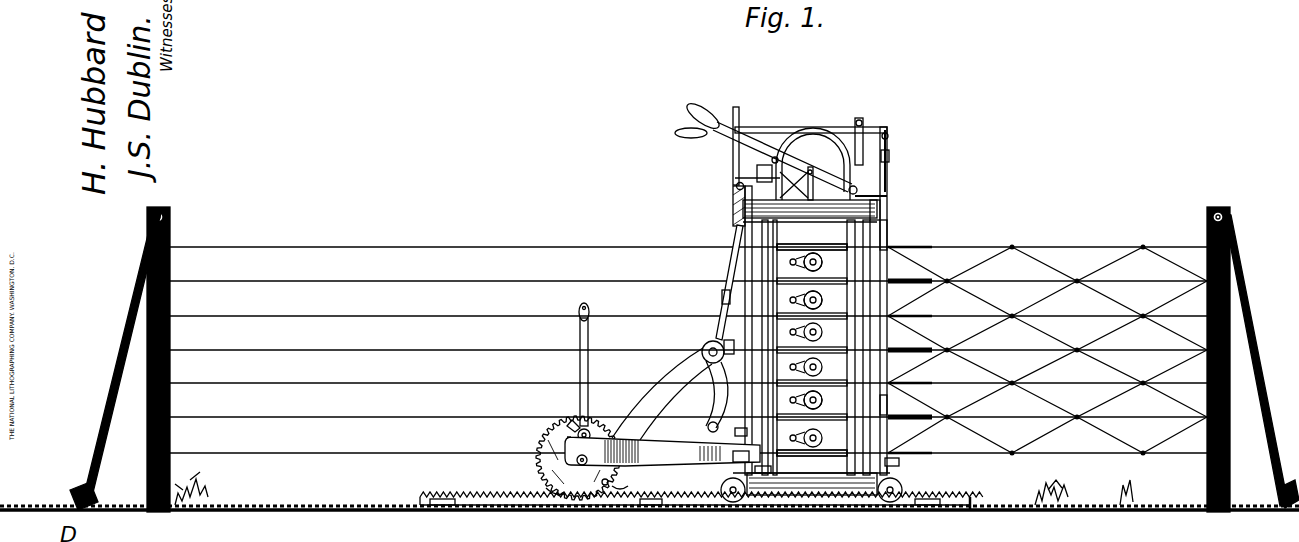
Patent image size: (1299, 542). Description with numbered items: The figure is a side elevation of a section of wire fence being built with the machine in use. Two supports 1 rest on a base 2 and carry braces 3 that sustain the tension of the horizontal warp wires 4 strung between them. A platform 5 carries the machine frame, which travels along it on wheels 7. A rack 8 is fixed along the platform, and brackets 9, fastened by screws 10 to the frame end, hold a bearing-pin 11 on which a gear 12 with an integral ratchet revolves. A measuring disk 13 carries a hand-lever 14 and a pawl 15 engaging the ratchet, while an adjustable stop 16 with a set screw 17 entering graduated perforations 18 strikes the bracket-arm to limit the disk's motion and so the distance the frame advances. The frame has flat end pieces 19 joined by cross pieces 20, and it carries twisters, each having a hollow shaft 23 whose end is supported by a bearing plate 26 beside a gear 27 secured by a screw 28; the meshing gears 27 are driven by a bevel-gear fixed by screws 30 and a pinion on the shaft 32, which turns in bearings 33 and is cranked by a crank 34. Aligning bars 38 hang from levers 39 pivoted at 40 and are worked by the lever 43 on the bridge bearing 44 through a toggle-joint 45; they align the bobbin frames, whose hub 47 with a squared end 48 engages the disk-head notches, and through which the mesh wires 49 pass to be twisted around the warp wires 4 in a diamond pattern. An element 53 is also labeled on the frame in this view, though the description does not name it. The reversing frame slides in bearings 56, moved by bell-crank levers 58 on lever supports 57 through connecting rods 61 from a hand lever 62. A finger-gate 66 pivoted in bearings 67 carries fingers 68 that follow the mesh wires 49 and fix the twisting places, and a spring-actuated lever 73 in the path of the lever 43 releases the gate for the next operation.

The supports 1 is at (158, 206).
The base 2 is at (394, 503).
The braces 3 is at (112, 380).
The warp wires 4 is at (292, 249).
The platform 5 is at (972, 503).
The wheels 7 is at (724, 486).
The rack 8 is at (903, 487).
The brackets 9 is at (668, 447).
The screws 10 is at (733, 456).
The bearing-pin 11 is at (590, 461).
The gear 12 is at (542, 446).
The measuring disk 13 is at (593, 431).
The hand-lever 14 is at (588, 366).
The pawl 15 is at (572, 420).
The adjustable stop 16 is at (608, 482).
The set screw 17 is at (633, 481).
The graduated perforations 18 is at (547, 489).
The end pieces 19 is at (755, 469).
The cross pieces 20 is at (790, 224).
The hollow shaft 23 is at (799, 350).
The bearing plate 26 is at (733, 230).
The gear 27 is at (730, 272).
The screw 28 is at (816, 350).
The screws 30 is at (806, 300).
The shaft 32 is at (702, 351).
The bearings 33 is at (731, 348).
The crank 34 is at (709, 423).
The aligning bars 38 is at (887, 232).
The levers 39 is at (900, 468).
The pivot 40 is at (898, 459).
The lever 43 is at (777, 127).
The bridge bearing 44 is at (779, 160).
The toggle-joint 45 is at (890, 138).
The hub 47 is at (816, 262).
The squared end 48 is at (810, 399).
The mesh wires 49 is at (1062, 278).
The cross bar 53 is at (812, 247).
The bearings 56 is at (810, 211).
The lever supports 57 is at (888, 406).
The bell-crank levers 58 is at (813, 460).
The connecting rods 61 is at (756, 170).
The hand lever 62 is at (733, 138).
The finger-gate 66 is at (887, 214).
The bearings 67 is at (878, 197).
The fingers 68 is at (810, 167).
The lever 73 is at (737, 107).